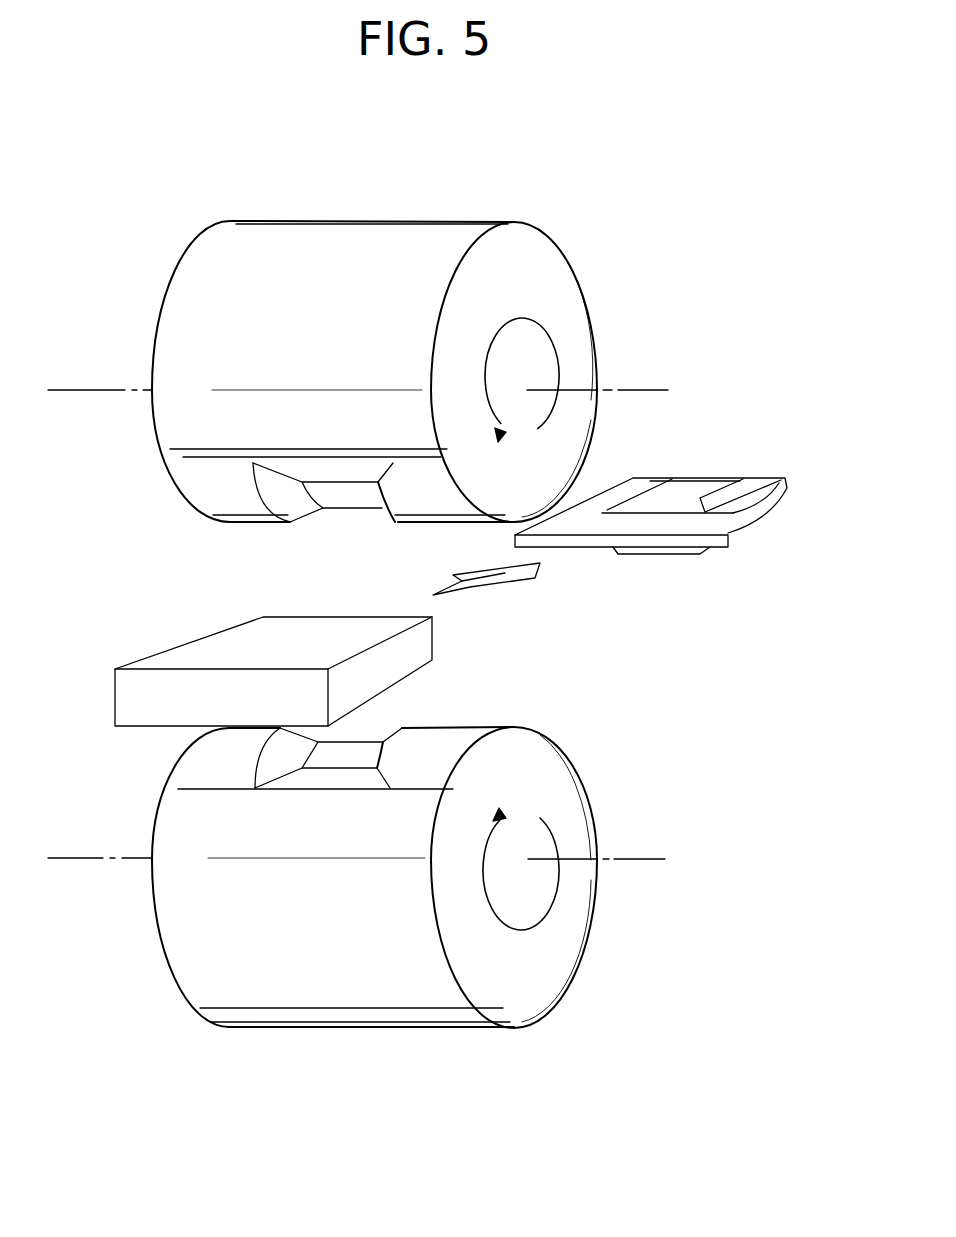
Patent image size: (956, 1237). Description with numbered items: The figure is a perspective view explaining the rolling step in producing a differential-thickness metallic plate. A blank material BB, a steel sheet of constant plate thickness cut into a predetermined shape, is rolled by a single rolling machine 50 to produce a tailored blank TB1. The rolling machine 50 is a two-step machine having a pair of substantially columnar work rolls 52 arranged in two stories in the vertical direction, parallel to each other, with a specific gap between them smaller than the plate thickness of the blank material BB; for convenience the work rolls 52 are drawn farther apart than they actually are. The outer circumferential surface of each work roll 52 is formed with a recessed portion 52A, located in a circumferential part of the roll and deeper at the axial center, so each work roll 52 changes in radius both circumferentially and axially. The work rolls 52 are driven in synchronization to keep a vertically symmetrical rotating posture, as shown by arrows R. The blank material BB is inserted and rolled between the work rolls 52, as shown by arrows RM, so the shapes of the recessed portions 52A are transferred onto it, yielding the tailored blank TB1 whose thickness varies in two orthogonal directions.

The rolling machine 50 is at (153, 194).
The work roll 52 is at (349, 236).
The recessed portion 52A is at (298, 526).
The arrow indicating rotation of work rolls R is at (519, 318).
The tailored blank TB1 is at (757, 477).
The arrow indicating rolling direction RM is at (487, 587).
The blank material BB is at (170, 648).